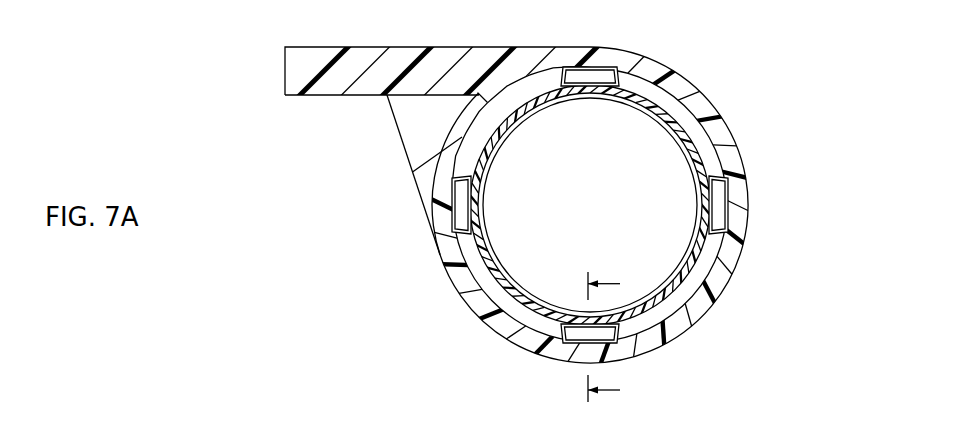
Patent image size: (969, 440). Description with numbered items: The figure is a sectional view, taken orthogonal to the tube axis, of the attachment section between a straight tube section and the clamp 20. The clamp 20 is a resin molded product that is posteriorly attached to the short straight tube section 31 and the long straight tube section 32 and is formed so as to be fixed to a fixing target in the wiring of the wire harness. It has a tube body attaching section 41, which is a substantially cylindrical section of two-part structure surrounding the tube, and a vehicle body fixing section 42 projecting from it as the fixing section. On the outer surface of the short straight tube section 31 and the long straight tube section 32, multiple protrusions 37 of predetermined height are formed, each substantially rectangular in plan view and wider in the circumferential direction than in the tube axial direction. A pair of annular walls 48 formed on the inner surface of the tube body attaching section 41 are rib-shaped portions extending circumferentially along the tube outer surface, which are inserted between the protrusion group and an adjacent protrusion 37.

The clamp 20 is at (330, 198).
The short straight tube section 31 is at (590, 205).
The long straight tube section 32 is at (485, 248).
The protrusion 37 is at (598, 65).
The tube body attaching section 41 is at (724, 115).
The vehicle body fixing section 42 is at (311, 97).
The annular wall 48 is at (507, 303).